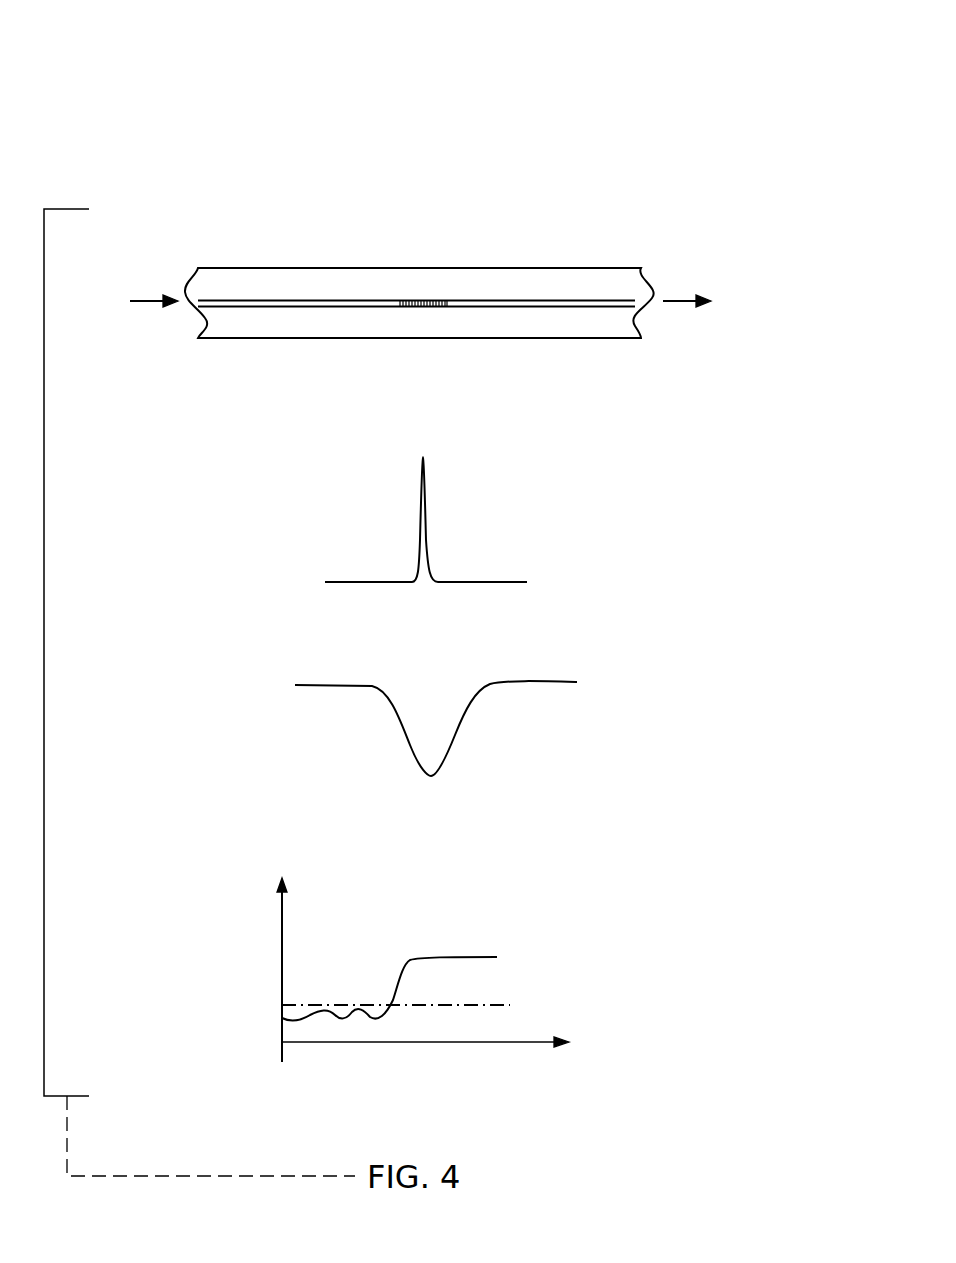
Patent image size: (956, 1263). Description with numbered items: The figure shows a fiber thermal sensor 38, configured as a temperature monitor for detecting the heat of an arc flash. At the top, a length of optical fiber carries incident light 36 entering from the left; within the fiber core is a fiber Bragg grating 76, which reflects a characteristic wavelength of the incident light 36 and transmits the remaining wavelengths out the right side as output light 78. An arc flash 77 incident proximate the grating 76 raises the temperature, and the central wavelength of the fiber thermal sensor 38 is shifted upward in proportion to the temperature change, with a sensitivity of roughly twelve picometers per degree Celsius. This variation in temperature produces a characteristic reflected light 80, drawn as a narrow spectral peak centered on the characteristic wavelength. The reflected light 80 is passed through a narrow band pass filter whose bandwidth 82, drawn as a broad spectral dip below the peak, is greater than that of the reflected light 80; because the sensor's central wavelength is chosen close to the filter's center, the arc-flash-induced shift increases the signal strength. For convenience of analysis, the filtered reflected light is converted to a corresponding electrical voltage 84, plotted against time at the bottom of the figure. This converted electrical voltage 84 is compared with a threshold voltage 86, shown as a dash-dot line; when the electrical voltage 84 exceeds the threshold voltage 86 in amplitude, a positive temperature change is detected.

The incident light 36 is at (143, 300).
The fiber thermal sensor 38 is at (689, 77).
The fiber Bragg grating 76 is at (418, 298).
The arc flash 77 is at (441, 263).
The output light 78 is at (687, 300).
The reflected light 80 is at (427, 469).
The bandwidth 82 is at (458, 740).
The electrical voltage 84 is at (427, 953).
The threshold voltage 86 is at (448, 1006).